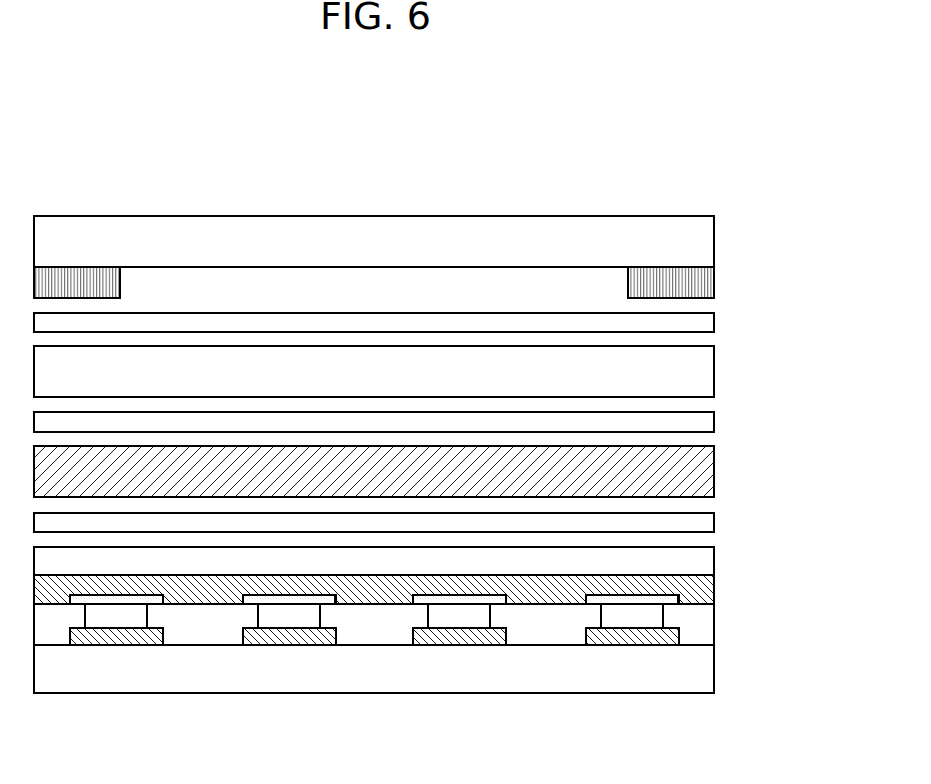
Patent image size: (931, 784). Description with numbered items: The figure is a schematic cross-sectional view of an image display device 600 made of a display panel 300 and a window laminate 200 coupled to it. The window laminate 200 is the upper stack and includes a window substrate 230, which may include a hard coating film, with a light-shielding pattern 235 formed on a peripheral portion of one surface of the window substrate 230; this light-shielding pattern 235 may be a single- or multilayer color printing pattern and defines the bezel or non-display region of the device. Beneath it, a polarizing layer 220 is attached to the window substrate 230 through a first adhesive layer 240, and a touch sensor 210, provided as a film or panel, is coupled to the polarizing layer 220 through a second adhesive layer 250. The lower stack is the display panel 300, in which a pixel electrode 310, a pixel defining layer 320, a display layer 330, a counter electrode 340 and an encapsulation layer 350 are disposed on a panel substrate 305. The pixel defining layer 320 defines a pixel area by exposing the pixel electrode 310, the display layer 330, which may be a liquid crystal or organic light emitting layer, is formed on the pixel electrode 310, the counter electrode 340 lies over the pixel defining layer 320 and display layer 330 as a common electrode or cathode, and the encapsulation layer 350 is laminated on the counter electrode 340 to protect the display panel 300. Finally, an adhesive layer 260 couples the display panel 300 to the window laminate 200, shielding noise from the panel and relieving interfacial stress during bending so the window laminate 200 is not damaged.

The image display device 600 is at (80, 162).
The window laminate 200 is at (813, 231).
The window substrate 230 is at (708, 243).
The light-shielding pattern 235 is at (708, 280).
The first adhesive layer 240 is at (708, 322).
The polarizing layer 220 is at (708, 372).
The second adhesive layer 250 is at (708, 422).
The touch sensor 210 is at (708, 470).
The adhesive layer 260 is at (708, 523).
The display panel 300 is at (813, 527).
The encapsulation layer 350 is at (708, 562).
The counter electrode 340 is at (713, 583).
The display layer 330 is at (643, 598).
The pixel defining layer 320 is at (708, 617).
The pixel electrode 310 is at (679, 636).
The panel substrate 305 is at (708, 668).